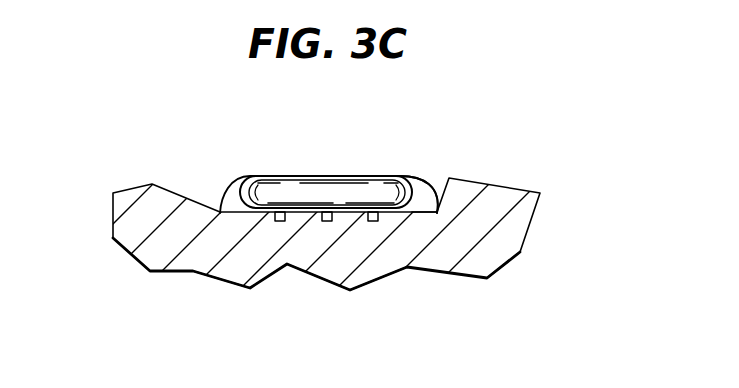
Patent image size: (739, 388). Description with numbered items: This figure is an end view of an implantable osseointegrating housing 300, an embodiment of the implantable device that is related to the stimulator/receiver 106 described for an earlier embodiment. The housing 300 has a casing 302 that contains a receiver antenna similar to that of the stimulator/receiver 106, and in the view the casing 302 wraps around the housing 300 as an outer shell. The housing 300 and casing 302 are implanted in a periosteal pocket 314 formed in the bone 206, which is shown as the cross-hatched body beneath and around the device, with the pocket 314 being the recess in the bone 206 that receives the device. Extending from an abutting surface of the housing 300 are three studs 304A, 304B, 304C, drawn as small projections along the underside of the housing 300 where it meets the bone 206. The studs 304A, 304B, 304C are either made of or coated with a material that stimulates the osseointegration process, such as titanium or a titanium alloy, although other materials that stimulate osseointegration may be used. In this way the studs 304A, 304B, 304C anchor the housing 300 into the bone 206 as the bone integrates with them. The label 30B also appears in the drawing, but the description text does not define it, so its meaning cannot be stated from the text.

The stimulator/receiver 106 is at (540, 138).
The bone 206 is at (121, 226).
The implantable osseointegrating housing 300 is at (328, 175).
The casing 302 is at (233, 183).
The stud 304A is at (280, 222).
The stud 304B is at (327, 222).
The stud 304C is at (373, 222).
The periosteal pocket 314 is at (440, 182).
The side of substrate 30B is at (436, 214).